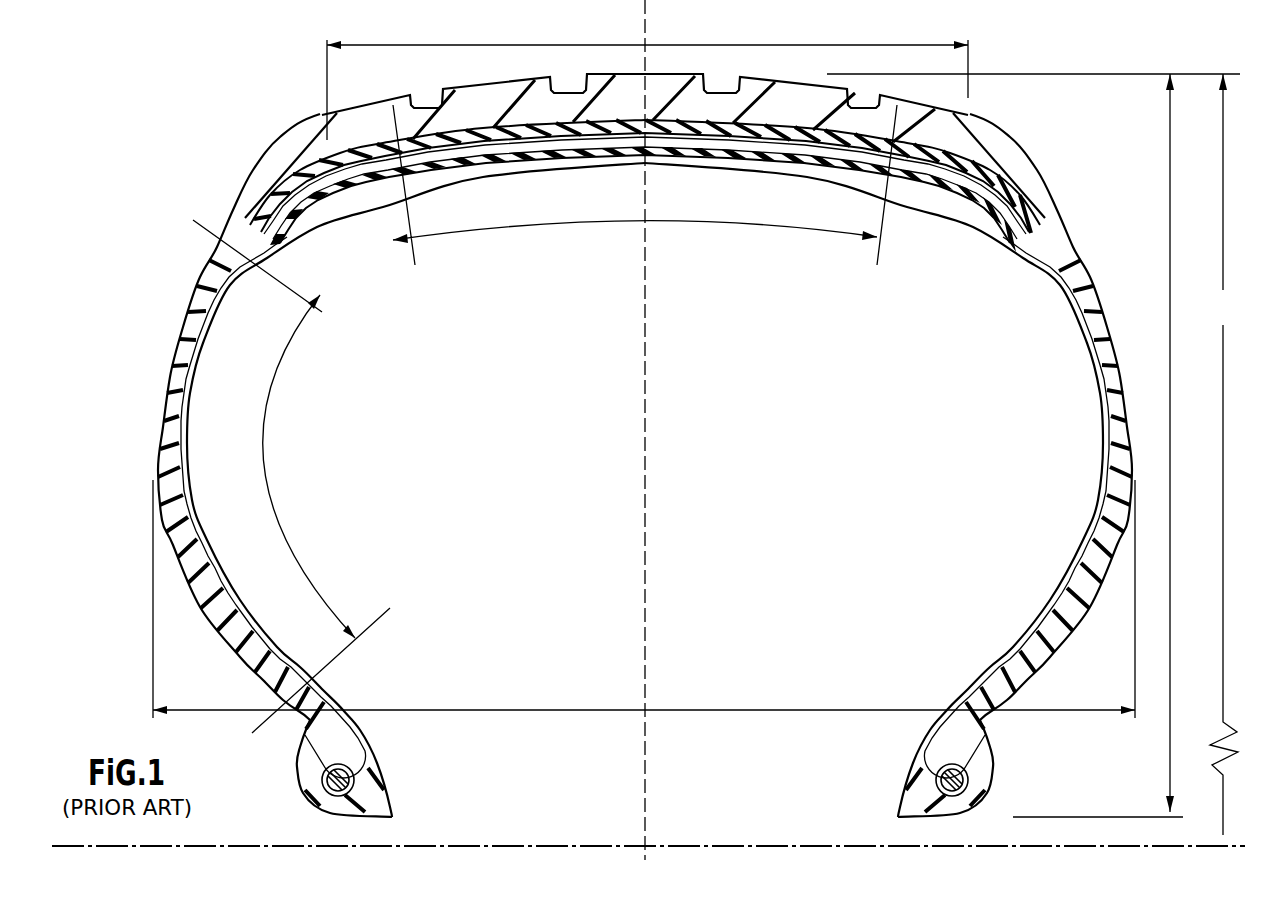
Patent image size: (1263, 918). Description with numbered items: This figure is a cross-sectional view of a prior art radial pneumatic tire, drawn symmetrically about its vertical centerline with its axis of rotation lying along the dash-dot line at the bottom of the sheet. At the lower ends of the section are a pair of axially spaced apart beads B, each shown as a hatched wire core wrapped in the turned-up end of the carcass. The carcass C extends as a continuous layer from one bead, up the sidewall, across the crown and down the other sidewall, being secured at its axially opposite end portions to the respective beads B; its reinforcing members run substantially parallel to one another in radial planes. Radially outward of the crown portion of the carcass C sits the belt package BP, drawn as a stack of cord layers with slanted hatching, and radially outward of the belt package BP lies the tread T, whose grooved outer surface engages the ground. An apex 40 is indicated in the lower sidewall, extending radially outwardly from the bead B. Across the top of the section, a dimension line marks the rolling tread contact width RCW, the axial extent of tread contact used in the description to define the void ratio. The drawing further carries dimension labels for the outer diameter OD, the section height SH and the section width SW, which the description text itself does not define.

The apex 40 is at (376, 730).
The tread T is at (783, 93).
The belt package BP is at (977, 168).
The carcass C is at (1097, 373).
The beads B is at (349, 778).
The rolling tread contact width RCW is at (647, 79).
The outer diameter dimension OD is at (1033, 454).
The section height dimension SH is at (1110, 445).
The section width dimension SW is at (644, 599).